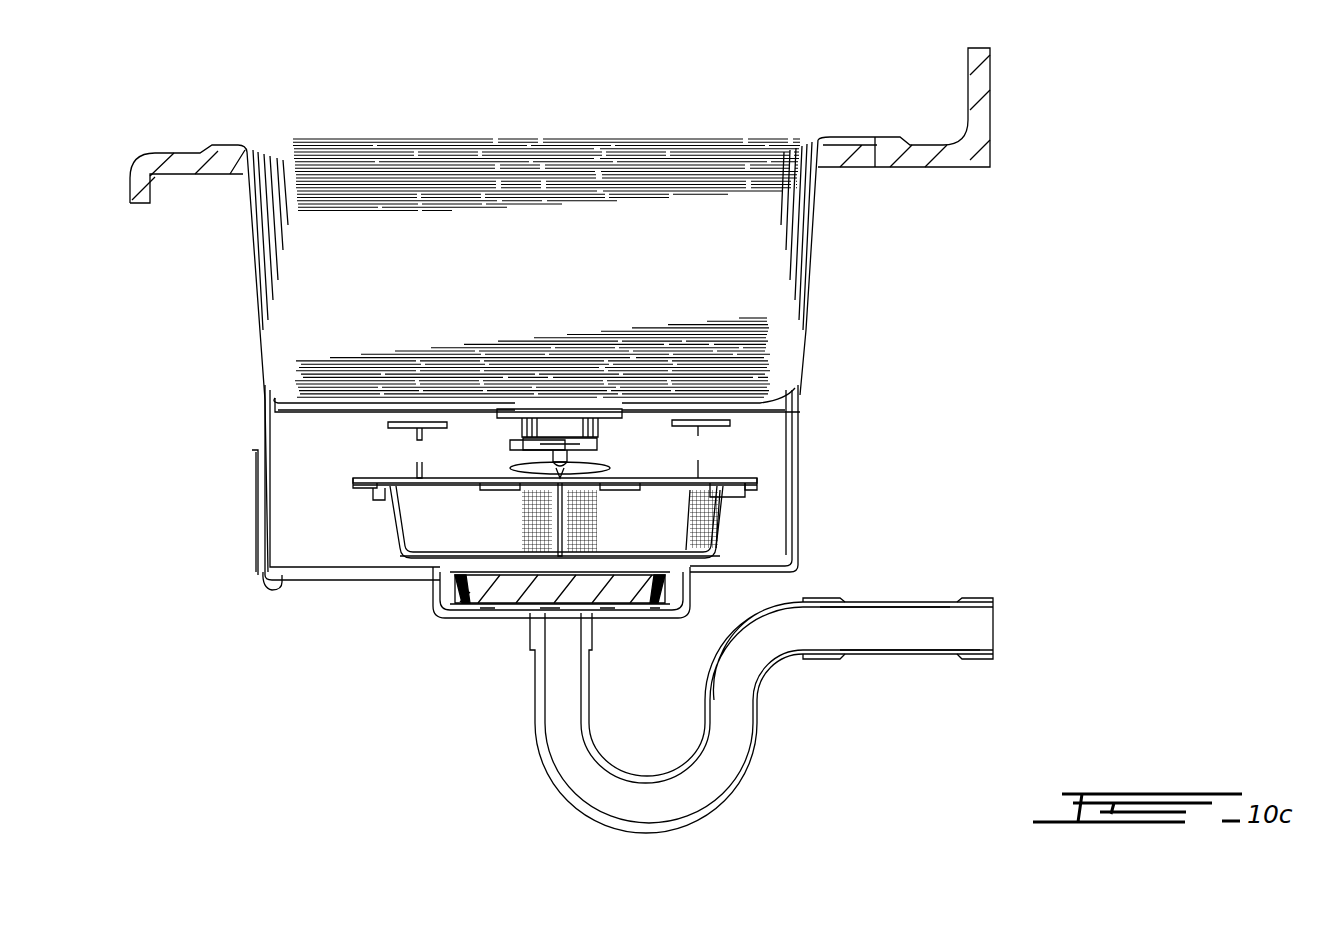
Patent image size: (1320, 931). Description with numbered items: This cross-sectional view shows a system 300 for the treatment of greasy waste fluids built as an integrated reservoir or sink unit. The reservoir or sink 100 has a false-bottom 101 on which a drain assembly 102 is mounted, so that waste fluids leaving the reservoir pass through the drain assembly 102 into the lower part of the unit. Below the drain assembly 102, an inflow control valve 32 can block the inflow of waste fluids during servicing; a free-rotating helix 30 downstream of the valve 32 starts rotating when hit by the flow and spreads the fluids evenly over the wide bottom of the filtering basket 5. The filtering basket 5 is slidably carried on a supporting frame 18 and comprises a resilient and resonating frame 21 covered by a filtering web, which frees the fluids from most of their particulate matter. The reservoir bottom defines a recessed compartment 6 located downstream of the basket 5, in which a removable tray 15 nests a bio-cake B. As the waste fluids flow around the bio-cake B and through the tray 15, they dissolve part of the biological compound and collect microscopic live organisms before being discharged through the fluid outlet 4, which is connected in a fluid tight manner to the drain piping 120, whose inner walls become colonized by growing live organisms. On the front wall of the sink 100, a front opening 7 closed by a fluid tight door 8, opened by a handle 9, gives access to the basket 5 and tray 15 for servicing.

The reservoir or sink 100 is at (657, 182).
The false-bottom 101 is at (487, 411).
The drain assembly 102 is at (568, 423).
The system for the treatment of greasy waste fluids 300 is at (905, 302).
The inflow control valve 32 is at (520, 445).
The supporting frame 18 is at (378, 478).
The handle 9 is at (256, 452).
The fluid tight door 8 is at (262, 525).
The front opening 7 is at (263, 550).
The free-rotating helix 30 is at (608, 468).
The filtering basket 5 is at (720, 510).
The resilient and resonating frame 21 is at (715, 545).
The compartment 6 is at (443, 592).
The removable tray 15 is at (441, 618).
The bio-cake B is at (613, 588).
The fluid outlet 4 is at (533, 635).
The drain piping 120 is at (552, 788).